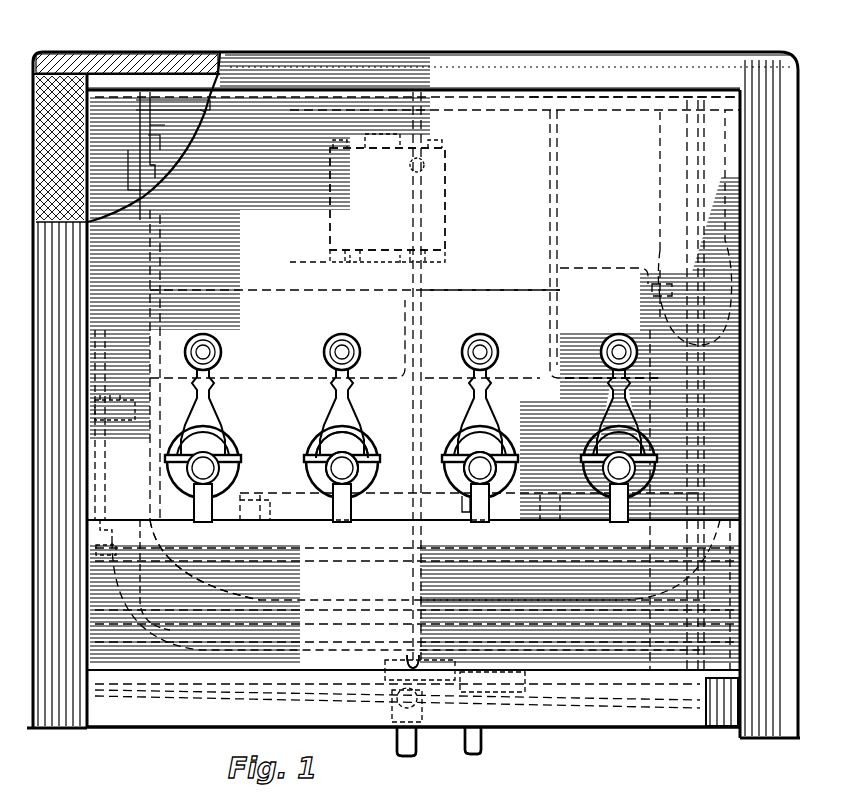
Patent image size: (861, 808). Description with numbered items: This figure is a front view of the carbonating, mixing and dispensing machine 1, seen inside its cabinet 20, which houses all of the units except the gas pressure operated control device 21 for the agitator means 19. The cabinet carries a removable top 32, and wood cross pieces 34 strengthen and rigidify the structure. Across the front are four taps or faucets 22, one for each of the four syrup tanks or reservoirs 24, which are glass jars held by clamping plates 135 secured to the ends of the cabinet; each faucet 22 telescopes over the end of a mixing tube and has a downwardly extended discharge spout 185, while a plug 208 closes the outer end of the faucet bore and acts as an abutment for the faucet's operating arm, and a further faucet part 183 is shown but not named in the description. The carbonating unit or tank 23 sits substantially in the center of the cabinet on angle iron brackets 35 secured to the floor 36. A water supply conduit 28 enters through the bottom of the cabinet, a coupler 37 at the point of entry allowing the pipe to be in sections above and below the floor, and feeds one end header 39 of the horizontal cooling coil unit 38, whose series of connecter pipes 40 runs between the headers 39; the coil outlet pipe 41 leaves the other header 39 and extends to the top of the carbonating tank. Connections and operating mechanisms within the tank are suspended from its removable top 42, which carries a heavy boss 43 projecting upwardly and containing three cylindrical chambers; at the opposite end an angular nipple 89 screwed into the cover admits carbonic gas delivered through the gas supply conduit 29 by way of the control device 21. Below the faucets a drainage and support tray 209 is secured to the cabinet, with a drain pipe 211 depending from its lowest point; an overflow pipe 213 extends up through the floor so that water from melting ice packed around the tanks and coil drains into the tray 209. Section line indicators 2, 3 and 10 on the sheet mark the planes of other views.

The refrigerator cabinet 1 is at (192, 127).
The section line 2- 2 is at (22, 112).
The section line 3- 3 is at (128, 24).
The section line 10- 10 is at (322, 312).
The agitator means 19 is at (450, 182).
The cabinet 20 is at (420, 50).
The gas pressure operated control device 21 is at (372, 663).
The faucet 22 is at (236, 428).
The carbonating unit 23 is at (632, 268).
The syrup tank 24 is at (549, 135).
The water supply conduit 28 is at (480, 740).
The gas supply conduit 29 is at (704, 712).
The removable top 32 is at (280, 62).
The cross piece 34 is at (66, 76).
The angle iron bracket 35 is at (545, 535).
The floor 36 is at (525, 563).
The coupler 37 is at (740, 520).
The cooling coil unit 38 is at (180, 550).
The header 39 is at (100, 520).
The connecter pipe 40 is at (148, 530).
The coil outlet pipe 41 is at (180, 340).
The removable top 42 is at (498, 268).
The heavy boss 43 is at (318, 258).
The angular nipple 89 is at (663, 268).
The clamping plate 135 is at (130, 150).
The valve yoke 183 is at (370, 440).
The discharge spout 185 is at (460, 508).
The plug 208 is at (478, 470).
The drainage and support tray 209 is at (592, 732).
The drain pipe 211 is at (407, 752).
The overflow pipe 213 is at (96, 410).